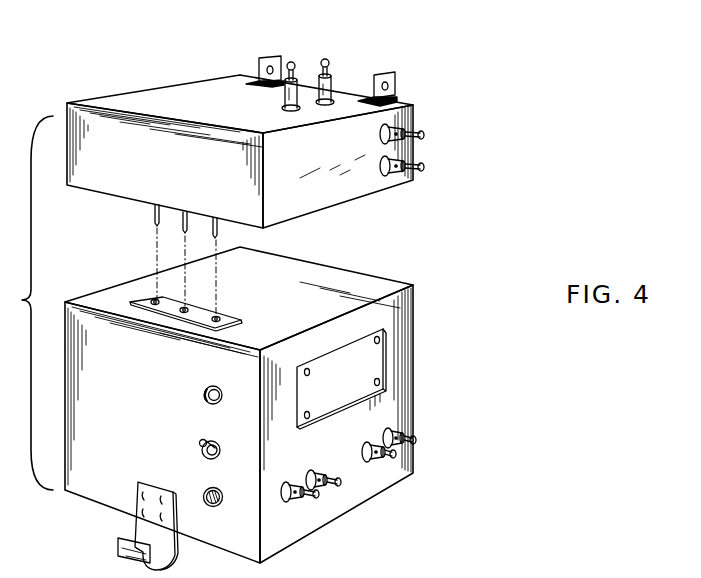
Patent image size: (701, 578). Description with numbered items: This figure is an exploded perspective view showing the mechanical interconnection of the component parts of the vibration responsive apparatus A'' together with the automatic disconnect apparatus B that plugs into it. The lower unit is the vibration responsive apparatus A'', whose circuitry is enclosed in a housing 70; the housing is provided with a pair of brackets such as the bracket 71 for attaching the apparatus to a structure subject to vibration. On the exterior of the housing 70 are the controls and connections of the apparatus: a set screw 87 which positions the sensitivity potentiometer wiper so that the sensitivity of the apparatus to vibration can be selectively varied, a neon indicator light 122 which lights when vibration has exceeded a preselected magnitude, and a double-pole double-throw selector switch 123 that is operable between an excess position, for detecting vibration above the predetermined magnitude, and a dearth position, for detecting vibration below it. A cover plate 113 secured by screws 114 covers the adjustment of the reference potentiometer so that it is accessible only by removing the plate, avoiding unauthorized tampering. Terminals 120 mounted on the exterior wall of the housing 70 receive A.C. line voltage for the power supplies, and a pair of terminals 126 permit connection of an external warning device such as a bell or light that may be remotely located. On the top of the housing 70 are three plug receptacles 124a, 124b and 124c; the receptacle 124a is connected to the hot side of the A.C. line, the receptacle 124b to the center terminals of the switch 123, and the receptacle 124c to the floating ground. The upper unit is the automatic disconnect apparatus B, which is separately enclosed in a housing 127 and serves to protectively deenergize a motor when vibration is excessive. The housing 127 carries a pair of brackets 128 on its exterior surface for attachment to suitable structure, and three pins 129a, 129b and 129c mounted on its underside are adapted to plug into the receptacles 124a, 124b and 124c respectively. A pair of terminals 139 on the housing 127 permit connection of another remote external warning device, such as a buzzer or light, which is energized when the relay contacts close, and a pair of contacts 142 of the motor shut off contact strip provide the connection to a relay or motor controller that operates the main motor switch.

The housing 70 is at (422, 305).
The bracket 71 is at (127, 558).
The set screw 87 is at (205, 490).
The cover plate 113 is at (358, 364).
The screws 114 is at (384, 340).
The terminals 120 is at (295, 487).
The neon indicator light 122 is at (204, 390).
The double-pole double-throw selector switch 123 is at (199, 444).
The plug receptacle 124a is at (150, 300).
The plug receptacle 124b is at (190, 306).
The connector plug receptacle 124c is at (221, 318).
The terminals 126 is at (387, 441).
The housing 127 is at (375, 192).
The brackets 128 is at (271, 56).
The pin 129a is at (153, 216).
The pin 129b is at (183, 228).
The pin 129c is at (213, 234).
The terminals 139 is at (402, 160).
The contacts 142 is at (335, 80).
The automatic disconnect apparatus B is at (169, 84).
The vibration responsive apparatus A'' is at (473, 382).